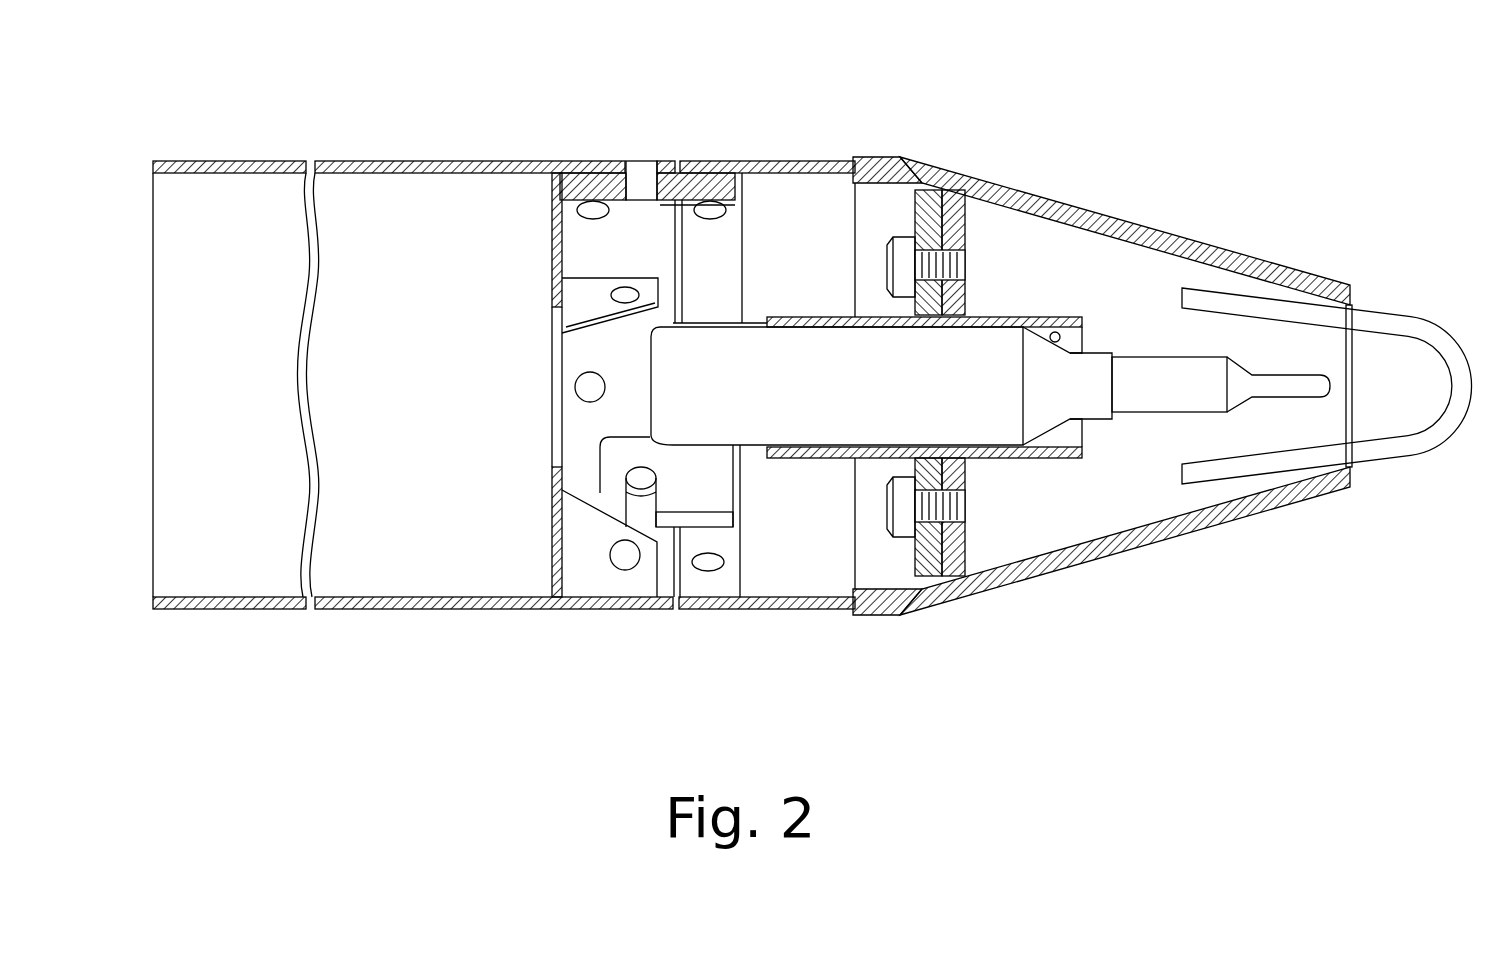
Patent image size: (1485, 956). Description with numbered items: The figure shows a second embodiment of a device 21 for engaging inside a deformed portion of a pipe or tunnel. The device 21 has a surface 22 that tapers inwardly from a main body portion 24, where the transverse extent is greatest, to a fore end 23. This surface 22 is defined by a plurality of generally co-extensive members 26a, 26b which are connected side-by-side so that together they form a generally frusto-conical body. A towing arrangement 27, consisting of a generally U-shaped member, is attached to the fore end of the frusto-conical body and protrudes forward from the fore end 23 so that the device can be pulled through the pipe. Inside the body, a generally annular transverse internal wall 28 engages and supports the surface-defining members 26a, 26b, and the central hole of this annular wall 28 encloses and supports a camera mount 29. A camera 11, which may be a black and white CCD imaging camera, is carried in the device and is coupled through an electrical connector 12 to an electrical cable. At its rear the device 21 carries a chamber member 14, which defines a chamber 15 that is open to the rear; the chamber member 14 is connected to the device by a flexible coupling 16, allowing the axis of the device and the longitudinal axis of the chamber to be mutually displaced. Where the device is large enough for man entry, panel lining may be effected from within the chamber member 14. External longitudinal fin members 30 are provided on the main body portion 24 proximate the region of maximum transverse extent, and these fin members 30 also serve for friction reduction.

The camera 11 is at (990, 345).
The electrical connector 12 is at (1130, 370).
The chamber member 14 is at (427, 612).
The chamber 15 is at (388, 210).
The flexible coupling 16 is at (700, 177).
The device 21 is at (1075, 567).
The surface 22 is at (960, 183).
The fore end 23 is at (1356, 470).
The main body portion 24 is at (873, 613).
The co-extensive member 26a is at (1215, 525).
The co-extensive member 26b is at (1288, 266).
The towing arrangement 27 is at (1413, 447).
The annular transverse internal wall 28 is at (950, 550).
The camera mount 29 is at (812, 313).
The external longitudinal fin members 30 is at (900, 160).